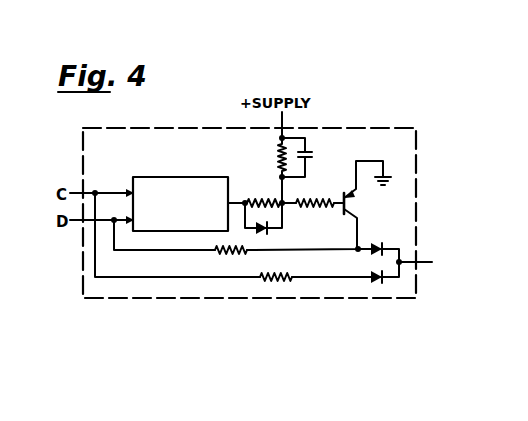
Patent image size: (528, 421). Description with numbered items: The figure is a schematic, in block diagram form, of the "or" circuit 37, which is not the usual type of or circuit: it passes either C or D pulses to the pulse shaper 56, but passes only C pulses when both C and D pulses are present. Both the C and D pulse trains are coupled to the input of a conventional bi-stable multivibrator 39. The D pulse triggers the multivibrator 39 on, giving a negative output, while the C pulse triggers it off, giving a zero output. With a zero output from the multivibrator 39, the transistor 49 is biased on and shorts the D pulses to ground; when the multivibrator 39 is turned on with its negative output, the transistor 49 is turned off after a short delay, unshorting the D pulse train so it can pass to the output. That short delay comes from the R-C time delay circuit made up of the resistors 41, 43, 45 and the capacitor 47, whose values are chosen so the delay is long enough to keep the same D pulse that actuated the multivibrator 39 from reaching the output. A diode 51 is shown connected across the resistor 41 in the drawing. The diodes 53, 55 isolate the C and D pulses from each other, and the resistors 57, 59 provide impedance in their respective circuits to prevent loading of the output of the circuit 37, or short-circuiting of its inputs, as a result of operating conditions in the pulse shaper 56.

The or circuit 37 is at (83, 143).
The bi-stable multivibrator 39 is at (175, 177).
The resistor 41 is at (265, 199).
The resistor 43 is at (278, 158).
The resistor 45 is at (306, 207).
The capacitor 47 is at (312, 152).
The transistor 49 is at (350, 208).
The diode 51 is at (264, 233).
The diode 53 is at (378, 244).
The diode 55 is at (377, 283).
The pulse shaper 56 is at (456, 263).
The resistor 57 is at (214, 252).
The resistor 59 is at (276, 276).